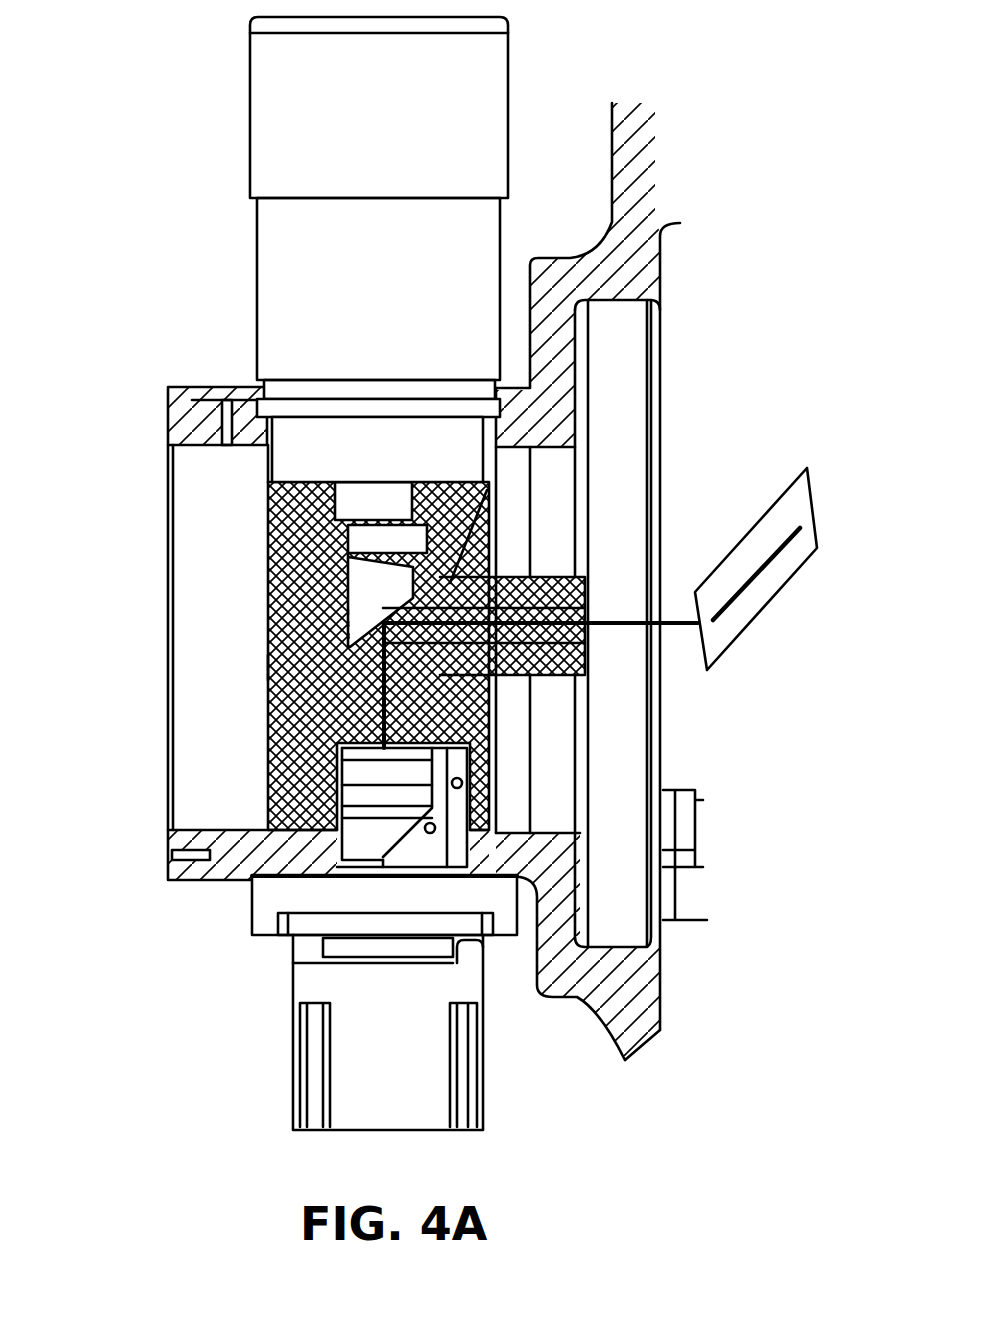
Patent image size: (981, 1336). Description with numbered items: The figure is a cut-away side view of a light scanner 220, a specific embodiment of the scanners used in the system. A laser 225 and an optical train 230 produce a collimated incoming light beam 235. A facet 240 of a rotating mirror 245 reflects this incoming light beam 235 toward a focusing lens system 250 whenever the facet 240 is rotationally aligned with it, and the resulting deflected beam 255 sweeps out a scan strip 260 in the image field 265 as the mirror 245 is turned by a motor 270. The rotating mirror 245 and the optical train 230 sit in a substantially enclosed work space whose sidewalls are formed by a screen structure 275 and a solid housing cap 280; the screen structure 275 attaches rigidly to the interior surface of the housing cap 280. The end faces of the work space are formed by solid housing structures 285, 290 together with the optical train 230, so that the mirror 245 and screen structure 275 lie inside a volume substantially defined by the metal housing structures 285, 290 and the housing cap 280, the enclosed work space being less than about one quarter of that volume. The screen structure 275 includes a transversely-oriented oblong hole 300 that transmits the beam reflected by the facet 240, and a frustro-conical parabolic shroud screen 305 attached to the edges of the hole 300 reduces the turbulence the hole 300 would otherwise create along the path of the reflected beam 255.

The light scanner 220 is at (722, 318).
The laser 225 is at (420, 1043).
The optical train 230 is at (363, 827).
The incoming light beam 235 is at (267, 666).
The facet 240 is at (267, 600).
The rotating mirror 245 is at (363, 597).
The focusing lens system 250 is at (627, 802).
The deflected beam 255 is at (618, 627).
The scan strip 260 is at (757, 570).
The image field 265 is at (807, 468).
The motor 270 is at (428, 335).
The screen structure 275 is at (267, 545).
The solid housing cap 280 is at (215, 762).
The solid housing structure 285 is at (343, 447).
The solid housing structure 290 is at (297, 843).
The oblong hole 300 is at (487, 490).
The frustro-conical parabolic shroud screen 305 is at (557, 577).